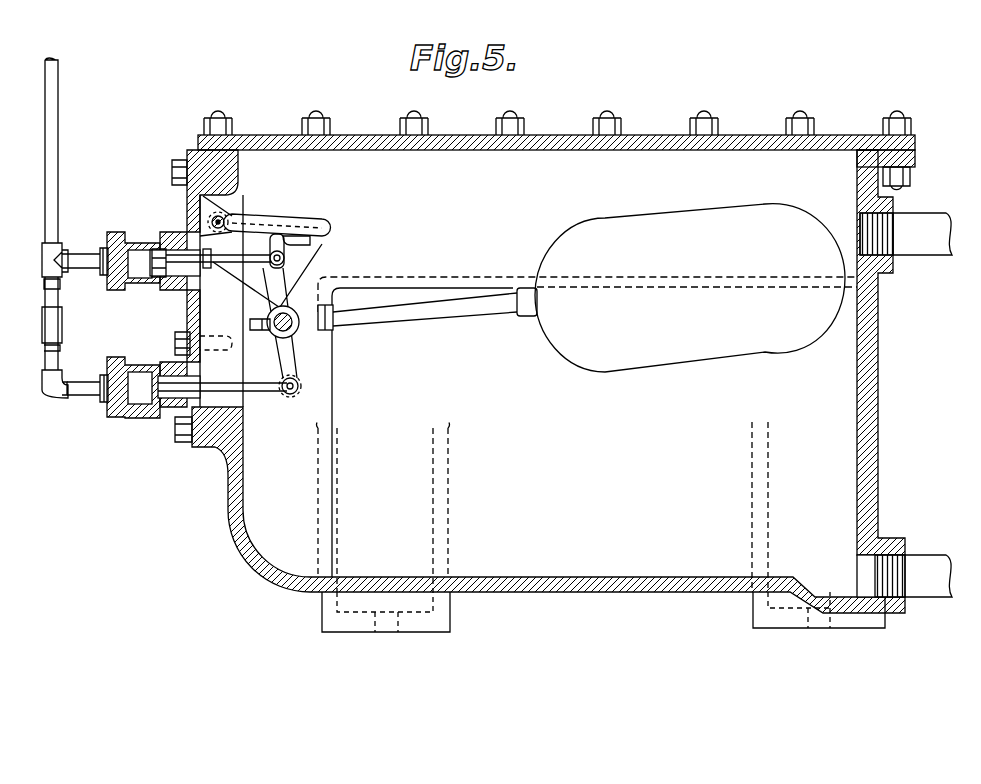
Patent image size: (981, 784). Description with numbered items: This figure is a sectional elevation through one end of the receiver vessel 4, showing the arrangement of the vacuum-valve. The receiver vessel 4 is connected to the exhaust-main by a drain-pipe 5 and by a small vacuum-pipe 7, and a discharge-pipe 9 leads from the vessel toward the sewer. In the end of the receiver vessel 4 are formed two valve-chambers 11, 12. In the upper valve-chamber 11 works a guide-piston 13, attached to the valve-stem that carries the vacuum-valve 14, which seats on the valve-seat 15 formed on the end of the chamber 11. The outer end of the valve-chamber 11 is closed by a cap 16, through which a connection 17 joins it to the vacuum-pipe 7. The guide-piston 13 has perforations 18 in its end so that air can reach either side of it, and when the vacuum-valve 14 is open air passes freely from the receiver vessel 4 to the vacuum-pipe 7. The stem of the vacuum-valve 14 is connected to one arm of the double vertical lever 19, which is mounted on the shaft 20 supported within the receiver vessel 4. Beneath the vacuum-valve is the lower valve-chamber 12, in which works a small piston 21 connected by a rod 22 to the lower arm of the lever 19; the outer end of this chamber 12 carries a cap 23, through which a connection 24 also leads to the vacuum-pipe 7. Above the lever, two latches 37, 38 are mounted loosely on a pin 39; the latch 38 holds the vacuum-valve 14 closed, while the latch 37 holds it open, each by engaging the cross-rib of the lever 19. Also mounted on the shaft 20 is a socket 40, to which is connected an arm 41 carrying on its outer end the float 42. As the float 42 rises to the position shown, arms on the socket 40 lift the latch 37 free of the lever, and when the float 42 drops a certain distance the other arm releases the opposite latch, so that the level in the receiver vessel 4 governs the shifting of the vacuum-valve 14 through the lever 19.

The receiver vessel 4 is at (537, 371).
The drain-pipe 5 is at (906, 234).
The vacuum-pipe 7 is at (55, 198).
The discharge-pipe 9 is at (904, 576).
The valve-chamber 11 is at (148, 283).
The valve-chamber 12 is at (150, 410).
The guide-piston 13 is at (141, 264).
The vacuum-valve 14 is at (210, 268).
The valve-seat 15 is at (204, 245).
The cap 16 is at (112, 287).
The connection 17 is at (88, 266).
The perforations 18 is at (158, 278).
The double vertical lever 19 is at (292, 352).
The shaft 20 is at (270, 334).
The small piston 21 is at (141, 388).
The rod 22 is at (262, 392).
The cap 23 is at (118, 415).
The connection 24 is at (70, 380).
The latch 37 is at (322, 227).
The latch 38 is at (310, 239).
The pin 39 is at (228, 218).
The socket 40 is at (340, 325).
The arm 41 is at (435, 314).
The float 42 is at (690, 288).